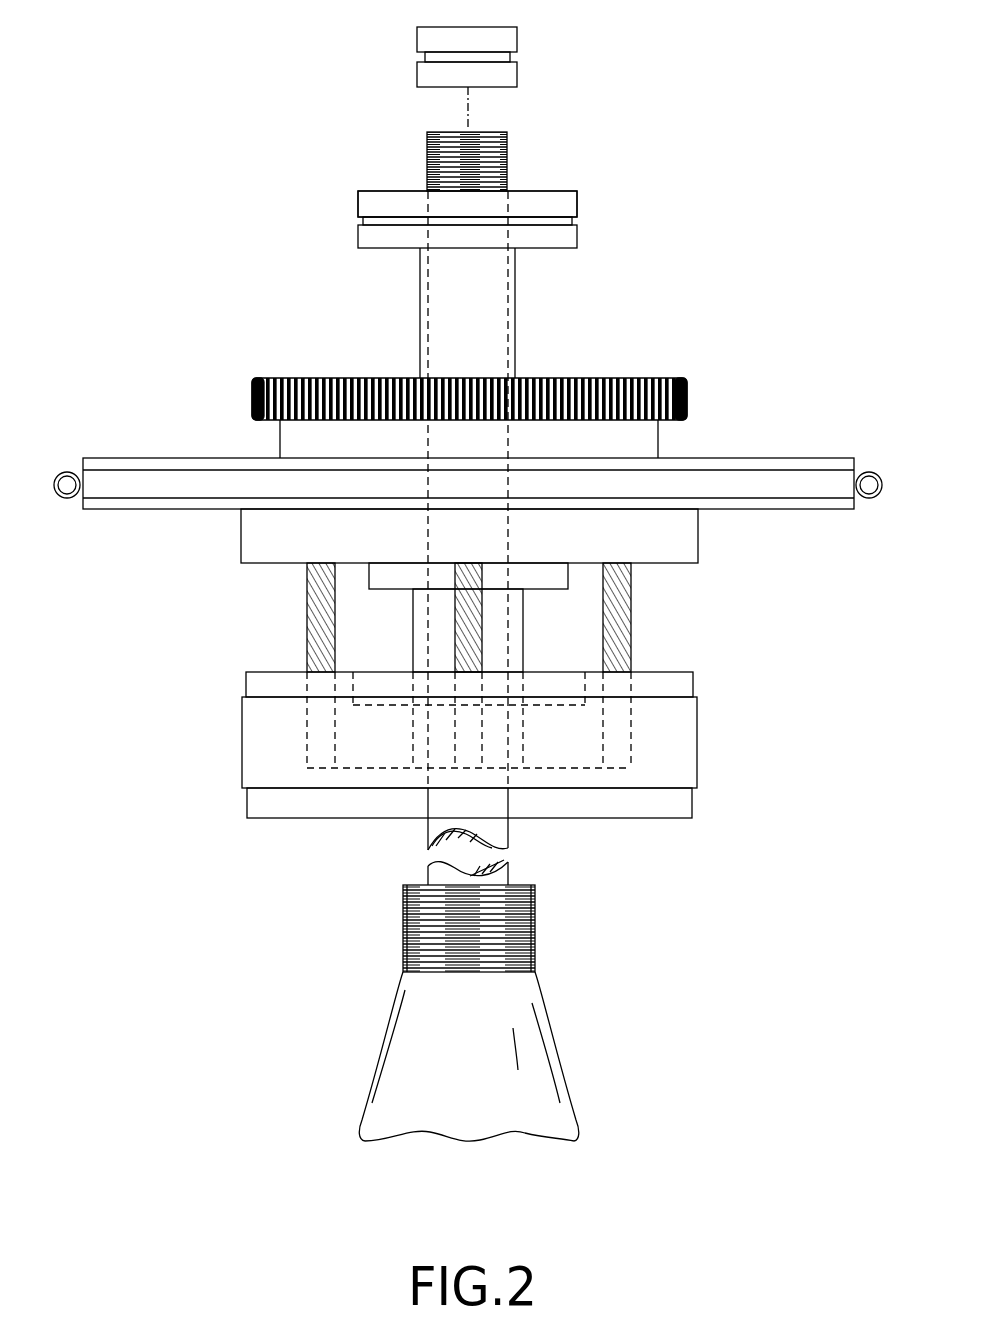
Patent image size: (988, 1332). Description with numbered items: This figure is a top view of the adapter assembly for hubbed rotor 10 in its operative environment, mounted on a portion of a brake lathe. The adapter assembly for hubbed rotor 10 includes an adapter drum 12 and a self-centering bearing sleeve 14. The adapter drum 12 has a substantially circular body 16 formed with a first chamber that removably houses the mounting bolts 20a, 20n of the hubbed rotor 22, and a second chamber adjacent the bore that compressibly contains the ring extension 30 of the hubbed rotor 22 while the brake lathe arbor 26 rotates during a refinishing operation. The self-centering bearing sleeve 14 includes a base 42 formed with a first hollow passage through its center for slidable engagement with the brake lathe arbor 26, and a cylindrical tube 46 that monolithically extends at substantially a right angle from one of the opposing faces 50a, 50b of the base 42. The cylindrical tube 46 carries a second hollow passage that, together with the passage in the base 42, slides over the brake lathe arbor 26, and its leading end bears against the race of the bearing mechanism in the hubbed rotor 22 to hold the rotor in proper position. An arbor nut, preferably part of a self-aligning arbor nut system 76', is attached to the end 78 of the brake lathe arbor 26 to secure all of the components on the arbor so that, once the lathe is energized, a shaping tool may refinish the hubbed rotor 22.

The adapter assembly for hubbed rotor 10 is at (192, 678).
The adapter drum 12 is at (697, 725).
The self-centering bearing sleeve 14 is at (577, 200).
The substantially circular body 16 is at (247, 803).
The mounting bolt 20a is at (631, 588).
The mounting bolt 20n is at (307, 620).
The hubbed rotor 22 is at (810, 458).
The brake lathe arbor 26 is at (510, 327).
The ring extension 30 is at (543, 577).
The base 42 is at (550, 188).
The cylindrical tube 46 is at (420, 318).
The opposing face of base 50a is at (567, 249).
The opposing face of base 50b is at (370, 198).
The self-aligning arbor nut system 76' is at (526, 69).
The end of brake lathe arbor 78 is at (507, 132).